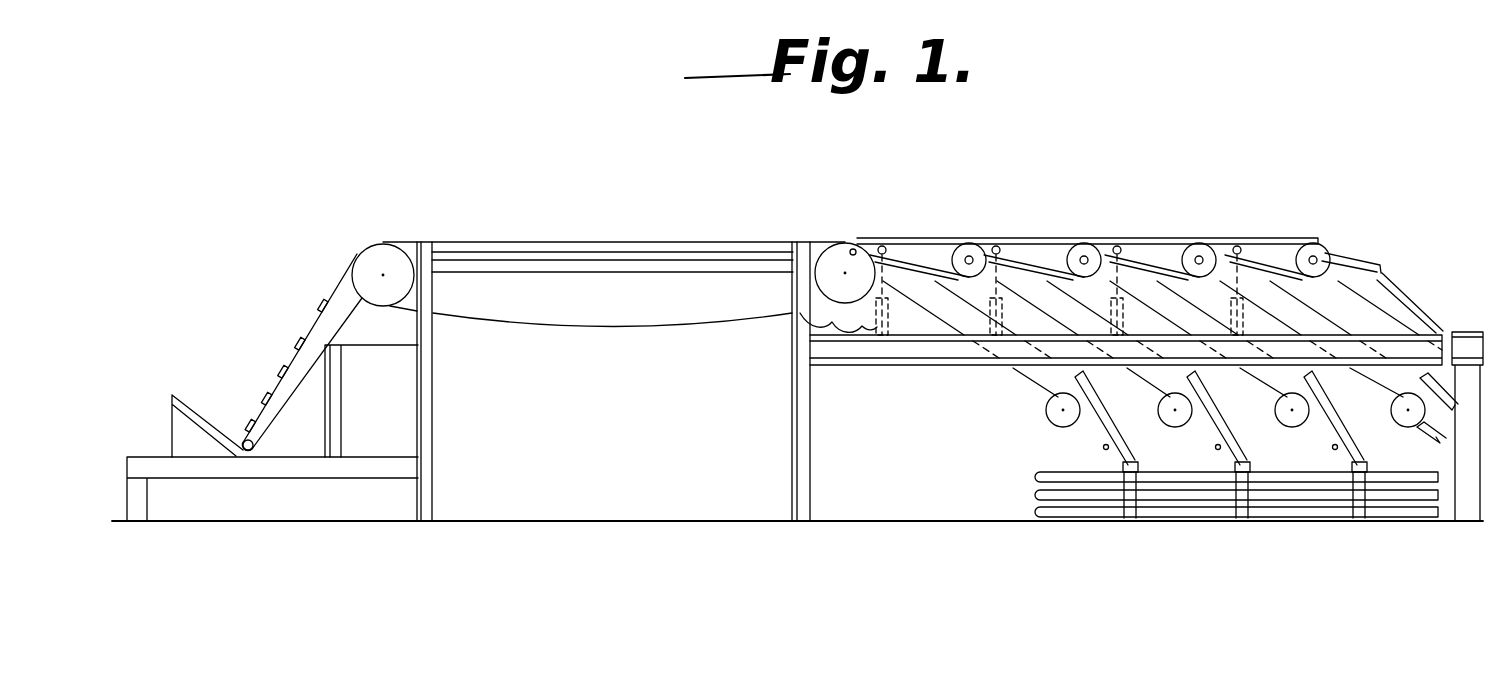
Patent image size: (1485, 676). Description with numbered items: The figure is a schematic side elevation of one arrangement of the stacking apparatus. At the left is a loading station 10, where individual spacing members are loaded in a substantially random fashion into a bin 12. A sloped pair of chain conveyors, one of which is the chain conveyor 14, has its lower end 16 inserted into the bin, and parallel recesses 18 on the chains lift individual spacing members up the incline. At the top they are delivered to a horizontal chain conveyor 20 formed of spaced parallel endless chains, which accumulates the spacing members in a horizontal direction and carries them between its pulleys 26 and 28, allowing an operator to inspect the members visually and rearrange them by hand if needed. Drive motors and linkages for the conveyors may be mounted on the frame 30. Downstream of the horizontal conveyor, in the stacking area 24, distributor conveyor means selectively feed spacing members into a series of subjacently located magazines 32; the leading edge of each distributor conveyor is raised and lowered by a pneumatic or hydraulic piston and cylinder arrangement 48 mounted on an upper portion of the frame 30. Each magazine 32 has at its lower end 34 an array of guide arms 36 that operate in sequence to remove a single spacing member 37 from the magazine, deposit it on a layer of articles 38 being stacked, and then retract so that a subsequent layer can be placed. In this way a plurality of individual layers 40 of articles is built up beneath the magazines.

The loading station 10 is at (228, 344).
The bin 12 is at (190, 412).
The chain conveyor 14 is at (318, 318).
The lower end 16 is at (258, 448).
The parallel recesses 18 is at (252, 412).
The horizontal chain conveyor 20 is at (404, 242).
The stacking area 24 is at (1141, 163).
The pulley 26 is at (388, 300).
The pulley 28 is at (818, 297).
The frame 30 is at (432, 455).
The magazine 32 is at (930, 317).
The lower end 34 is at (1046, 397).
The guide arms 36 is at (1062, 442).
The spacing member 37 is at (1133, 455).
The layer of articles 38 is at (1194, 530).
The layers 40 is at (1335, 478).
The piston and cylinder arrangement 48 is at (888, 317).